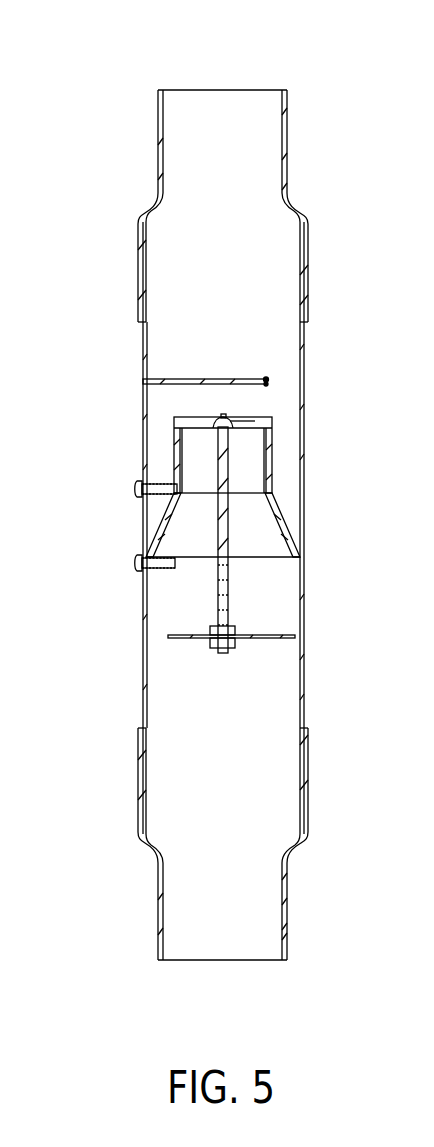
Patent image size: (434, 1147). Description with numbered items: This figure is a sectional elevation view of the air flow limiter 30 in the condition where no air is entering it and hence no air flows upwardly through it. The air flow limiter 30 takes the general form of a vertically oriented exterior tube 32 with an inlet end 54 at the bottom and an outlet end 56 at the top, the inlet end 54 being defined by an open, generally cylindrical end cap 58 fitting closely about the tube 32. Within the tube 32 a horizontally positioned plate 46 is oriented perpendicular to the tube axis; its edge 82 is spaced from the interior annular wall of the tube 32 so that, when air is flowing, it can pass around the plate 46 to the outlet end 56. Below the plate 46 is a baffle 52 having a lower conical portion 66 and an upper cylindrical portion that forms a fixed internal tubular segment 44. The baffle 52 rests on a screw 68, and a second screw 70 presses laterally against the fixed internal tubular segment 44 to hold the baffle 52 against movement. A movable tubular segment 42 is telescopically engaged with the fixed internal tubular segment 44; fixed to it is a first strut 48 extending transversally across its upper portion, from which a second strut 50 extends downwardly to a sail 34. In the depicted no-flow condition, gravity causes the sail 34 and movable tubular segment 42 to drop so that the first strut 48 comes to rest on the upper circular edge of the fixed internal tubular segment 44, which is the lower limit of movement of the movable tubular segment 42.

The air flow limiter 30 is at (322, 152).
The vertically oriented exterior tube 32 is at (305, 672).
The sail 34 is at (276, 634).
The movable tubular segment 42 is at (272, 442).
The fixed internal tubular segment 44 is at (186, 446).
The plate 46 is at (235, 379).
The first strut 48 is at (225, 416).
The second strut 50 is at (229, 590).
The baffle 52 is at (283, 507).
The inlet end 54 is at (237, 943).
The outlet end 56 is at (226, 123).
The end cap 58 is at (288, 893).
The conical portion 66 is at (291, 532).
The screw 68 is at (137, 560).
The screw 70 is at (137, 485).
The edge 82 is at (270, 381).